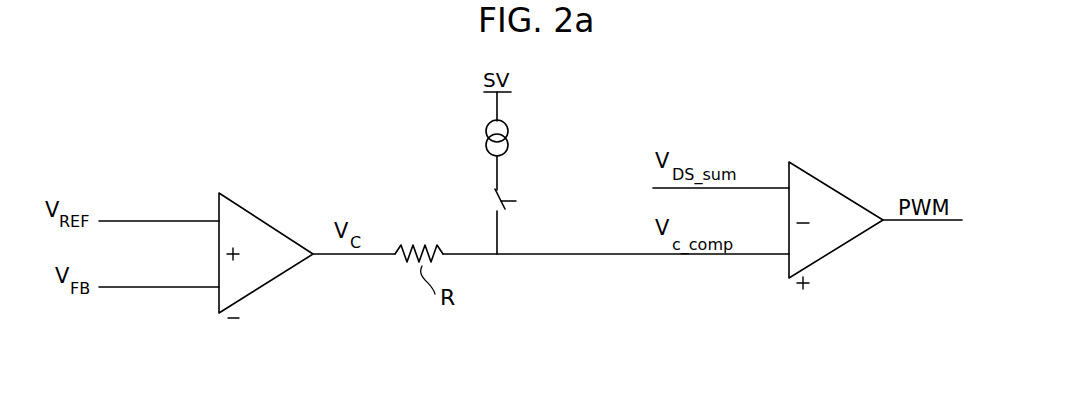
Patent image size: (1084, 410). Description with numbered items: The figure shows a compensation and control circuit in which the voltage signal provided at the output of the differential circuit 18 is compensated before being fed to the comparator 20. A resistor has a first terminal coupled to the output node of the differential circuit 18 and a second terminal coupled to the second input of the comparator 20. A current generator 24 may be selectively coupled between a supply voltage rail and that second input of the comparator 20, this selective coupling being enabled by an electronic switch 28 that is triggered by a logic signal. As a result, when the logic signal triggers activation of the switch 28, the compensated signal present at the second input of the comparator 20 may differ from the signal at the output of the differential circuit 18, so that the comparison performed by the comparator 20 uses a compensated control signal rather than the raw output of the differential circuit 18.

The differential circuit 18 is at (273, 228).
The comparator 20 is at (837, 244).
The current generator 24 is at (508, 134).
The electronic switch 28 is at (486, 200).